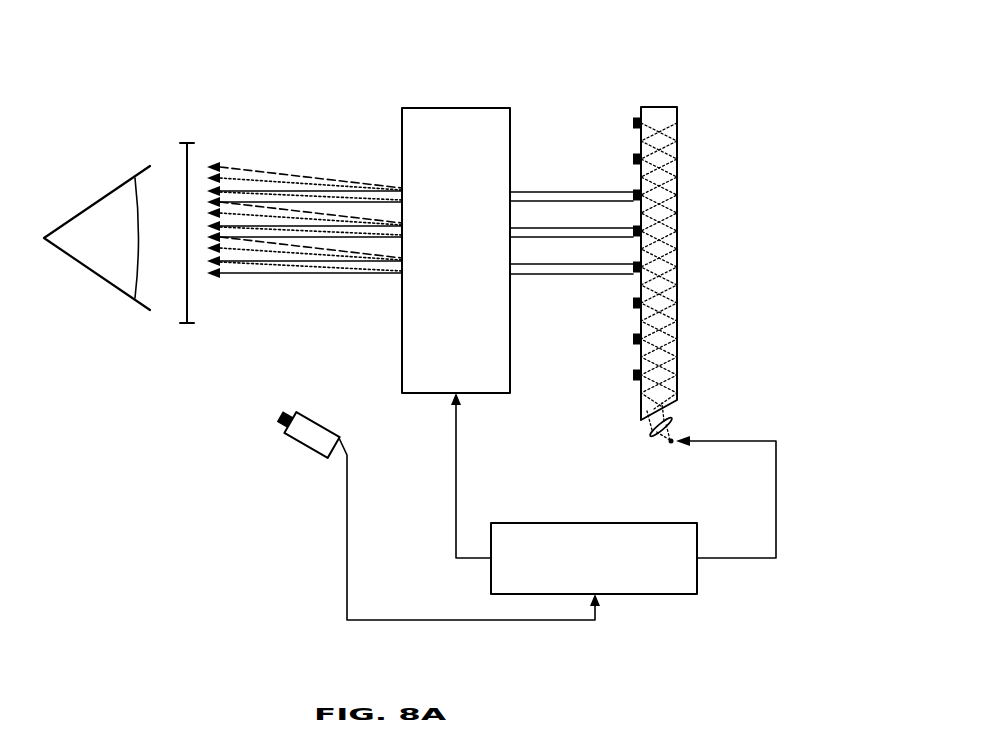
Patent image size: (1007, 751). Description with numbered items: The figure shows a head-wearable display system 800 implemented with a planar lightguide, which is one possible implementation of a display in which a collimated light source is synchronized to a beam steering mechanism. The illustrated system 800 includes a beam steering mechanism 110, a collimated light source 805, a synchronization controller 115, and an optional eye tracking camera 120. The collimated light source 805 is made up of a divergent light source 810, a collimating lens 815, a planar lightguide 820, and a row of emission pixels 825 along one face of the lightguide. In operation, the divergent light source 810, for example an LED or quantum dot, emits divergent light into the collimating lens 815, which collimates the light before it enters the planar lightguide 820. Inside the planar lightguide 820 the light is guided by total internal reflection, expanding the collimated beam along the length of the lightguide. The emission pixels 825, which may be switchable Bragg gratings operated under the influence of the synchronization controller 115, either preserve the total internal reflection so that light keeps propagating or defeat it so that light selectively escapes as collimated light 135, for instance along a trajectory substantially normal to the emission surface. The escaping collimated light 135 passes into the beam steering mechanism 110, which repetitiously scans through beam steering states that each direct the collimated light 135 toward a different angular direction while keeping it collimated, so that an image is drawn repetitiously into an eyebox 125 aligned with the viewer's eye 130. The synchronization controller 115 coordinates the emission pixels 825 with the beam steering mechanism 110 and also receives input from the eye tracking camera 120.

The head-wearable display system 800 is at (270, 44).
The eyebox 125 is at (187, 143).
The eye 130 is at (93, 247).
The collimated light 135 is at (593, 191).
The beam steering mechanism 110 is at (443, 367).
The eye tracking camera 120 is at (294, 439).
The synchronization controller 115 is at (677, 582).
The collimated light source 805 is at (632, 91).
The planar lightguide 820 is at (678, 240).
The emission pixels 825 is at (633, 377).
The collimating lens 815 is at (673, 420).
The divergent light source 810 is at (671, 443).